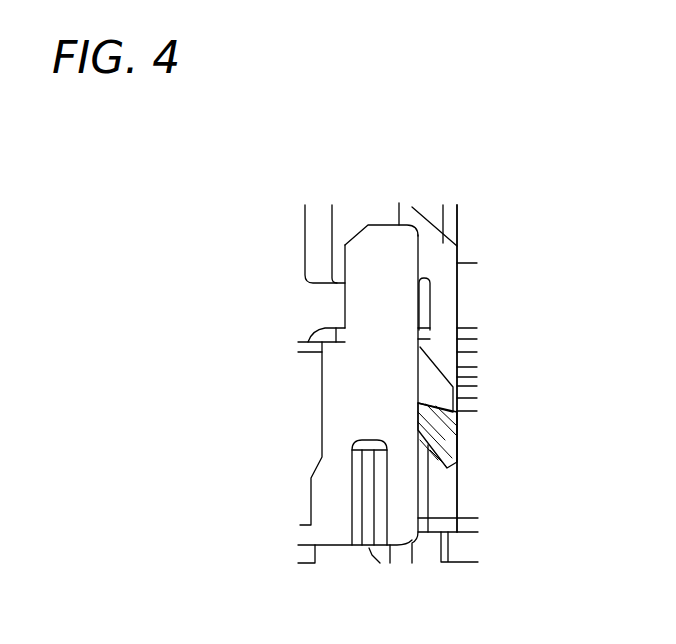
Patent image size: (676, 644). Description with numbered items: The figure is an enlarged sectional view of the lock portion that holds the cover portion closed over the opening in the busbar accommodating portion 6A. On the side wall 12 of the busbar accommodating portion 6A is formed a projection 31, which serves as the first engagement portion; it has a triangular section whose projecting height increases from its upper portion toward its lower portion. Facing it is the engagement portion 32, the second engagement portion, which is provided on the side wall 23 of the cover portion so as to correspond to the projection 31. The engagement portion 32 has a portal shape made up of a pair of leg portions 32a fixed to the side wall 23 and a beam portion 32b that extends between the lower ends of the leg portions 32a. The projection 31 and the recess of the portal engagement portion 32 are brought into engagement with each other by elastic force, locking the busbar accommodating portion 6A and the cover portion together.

The side wall 12 is at (397, 263).
The side wall 23 is at (356, 213).
The busbar accommodating portion 6A is at (397, 387).
The engagement portion 32 is at (441, 288).
The leg portions 32a is at (440, 318).
The projection 31 is at (433, 378).
The beam portion 32b is at (447, 443).